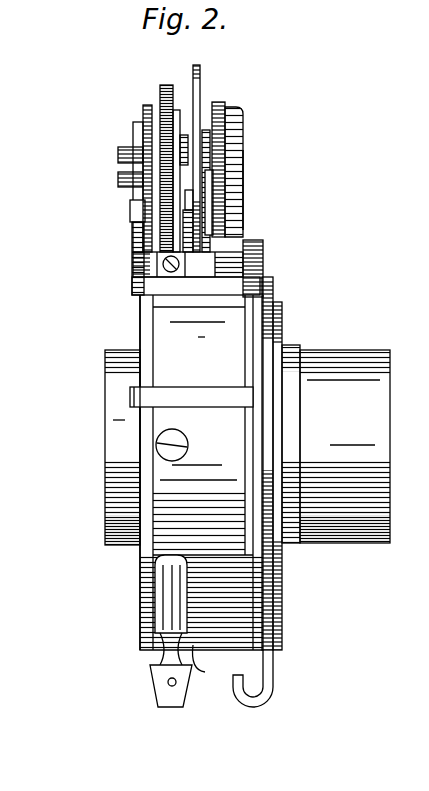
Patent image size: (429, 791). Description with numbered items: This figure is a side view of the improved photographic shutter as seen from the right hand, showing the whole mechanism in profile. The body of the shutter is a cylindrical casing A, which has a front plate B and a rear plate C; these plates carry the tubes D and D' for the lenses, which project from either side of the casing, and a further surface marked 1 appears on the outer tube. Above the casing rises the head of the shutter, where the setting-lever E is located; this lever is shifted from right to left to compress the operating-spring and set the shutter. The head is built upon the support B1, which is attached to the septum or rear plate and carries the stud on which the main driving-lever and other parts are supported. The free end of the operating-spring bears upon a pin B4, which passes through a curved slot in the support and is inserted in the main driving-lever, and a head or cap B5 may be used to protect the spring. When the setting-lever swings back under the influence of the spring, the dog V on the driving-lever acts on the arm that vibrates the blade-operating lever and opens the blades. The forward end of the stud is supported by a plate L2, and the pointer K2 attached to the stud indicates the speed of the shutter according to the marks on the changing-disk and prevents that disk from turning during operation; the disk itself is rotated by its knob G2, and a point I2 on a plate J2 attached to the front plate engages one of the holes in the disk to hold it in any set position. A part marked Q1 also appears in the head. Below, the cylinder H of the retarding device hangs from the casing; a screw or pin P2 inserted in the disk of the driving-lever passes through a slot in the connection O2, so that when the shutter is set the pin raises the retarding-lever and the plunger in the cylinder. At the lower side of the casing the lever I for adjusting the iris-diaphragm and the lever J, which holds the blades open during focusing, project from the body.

The cylindrical casing A is at (197, 463).
The front plate B is at (140, 318).
The rear plate C is at (258, 258).
The tube D is at (106, 447).
The tube D' is at (363, 446).
The drum surface 1 is at (352, 425).
The setting-lever E is at (209, 145).
The cylinder of the retarding device H is at (165, 608).
The lever for adjusting the iris-diaphragm I is at (215, 402).
The lever which holds the blades open J is at (205, 663).
The pointer K2 is at (135, 137).
The knob G2 is at (118, 180).
The point I2 is at (143, 215).
The plate J2 is at (140, 258).
The plate L2 is at (160, 93).
The gear Q1 is at (172, 88).
The screw or pin P2 is at (190, 200).
The connection O2 is at (220, 218).
The pin B4 is at (210, 188).
The support for the head of the shutter B1 is at (217, 103).
The head or cap B5 is at (241, 142).
The dog V is at (280, 190).